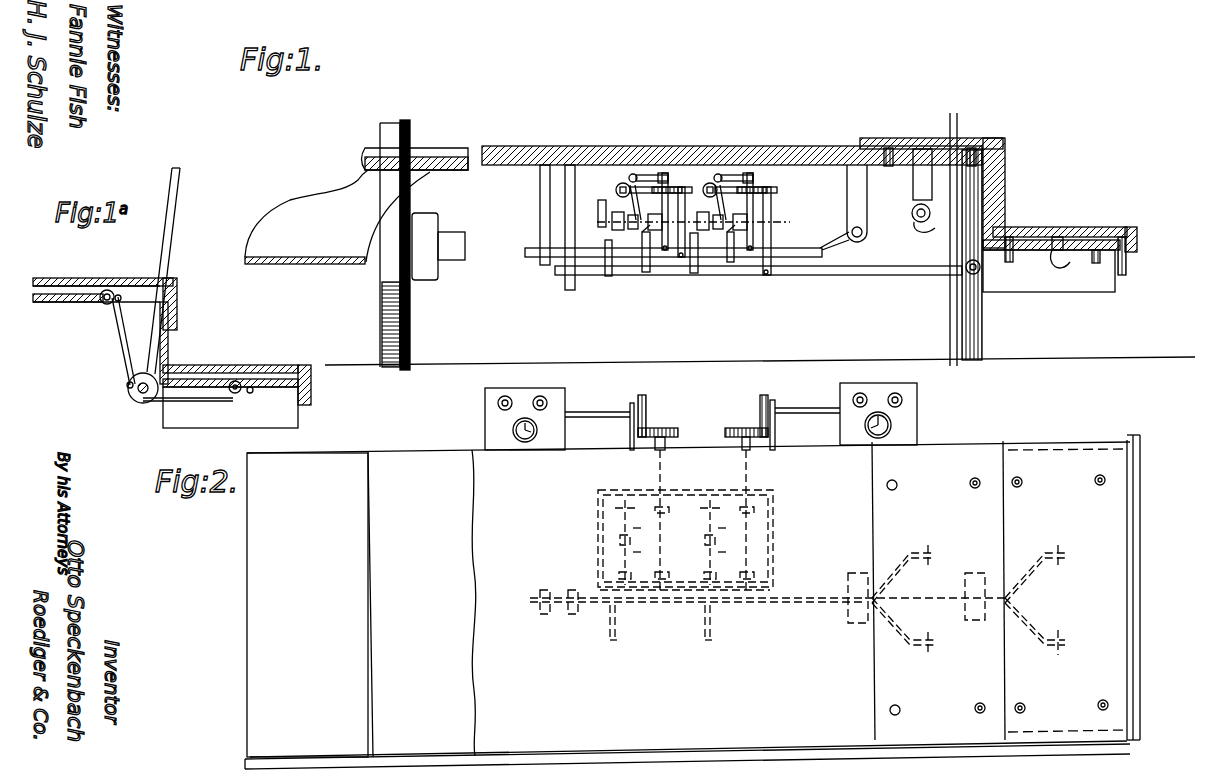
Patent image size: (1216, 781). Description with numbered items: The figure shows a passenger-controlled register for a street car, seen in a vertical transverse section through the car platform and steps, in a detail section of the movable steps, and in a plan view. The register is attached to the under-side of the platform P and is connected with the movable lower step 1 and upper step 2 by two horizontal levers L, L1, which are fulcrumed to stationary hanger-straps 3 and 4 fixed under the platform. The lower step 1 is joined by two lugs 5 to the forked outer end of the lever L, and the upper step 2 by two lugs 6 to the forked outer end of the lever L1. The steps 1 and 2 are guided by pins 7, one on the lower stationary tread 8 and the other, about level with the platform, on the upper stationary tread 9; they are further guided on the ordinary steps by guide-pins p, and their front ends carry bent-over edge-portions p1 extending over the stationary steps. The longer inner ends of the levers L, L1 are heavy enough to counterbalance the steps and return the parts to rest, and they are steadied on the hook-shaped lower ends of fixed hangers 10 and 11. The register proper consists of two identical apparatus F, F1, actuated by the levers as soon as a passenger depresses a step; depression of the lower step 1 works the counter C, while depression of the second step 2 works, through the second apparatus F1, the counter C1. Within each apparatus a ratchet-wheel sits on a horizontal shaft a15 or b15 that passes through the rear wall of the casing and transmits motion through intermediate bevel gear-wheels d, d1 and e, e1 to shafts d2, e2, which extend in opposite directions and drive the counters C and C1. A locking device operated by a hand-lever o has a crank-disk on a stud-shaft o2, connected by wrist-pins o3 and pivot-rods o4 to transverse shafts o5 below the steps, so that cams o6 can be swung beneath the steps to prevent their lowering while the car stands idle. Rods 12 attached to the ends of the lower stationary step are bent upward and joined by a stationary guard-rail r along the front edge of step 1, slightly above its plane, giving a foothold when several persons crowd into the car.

In FIG. 1, the lower step 1 is at (1040, 233).
In FIG. 1A, the lower step 1 is at (240, 365).
In FIG. 2, the lower step 1 is at (1093, 590).
In FIG. 1, the upper step 2 is at (935, 139).
In FIG. 1A, the upper step 2 is at (85, 278).
In FIG. 2, the upper step 2 is at (938, 590).
In FIG. 1, the hanger-strap 3 is at (962, 285).
In FIG. 2, the hanger-strap 3 is at (968, 605).
In FIG. 1, the hanger-strap 4 is at (860, 205).
In FIG. 2, the hanger-strap 4 is at (848, 620).
In FIG. 1, the lugs 5 is at (1060, 256).
In FIG. 1, the lugs 6 is at (918, 198).
In FIG. 1, the pins 7 is at (891, 147).
In FIG. 2, the pins 7 is at (968, 480).
In FIG. 1, the lower stationary tread 8 is at (313, 262).
In FIG. 2, the lower stationary tread 8 is at (307, 605).
In FIG. 1, the upper stationary tread 9 is at (430, 165).
In FIG. 2, the upper stationary tread 9 is at (393, 604).
In FIG. 1, the fixed hanger 10 is at (566, 280).
In FIG. 1, the fixed hanger 11 is at (544, 215).
In FIG. 1, the rods 12 is at (1088, 227).
In FIG. 2, the rods 12 is at (1090, 445).
In FIG. 1, the platform P is at (660, 146).
In FIG. 2, the platform P is at (687, 605).
In FIG. 1, the guide-pins p is at (1005, 180).
In FIG. 1, the bent-over edge-portions p1 is at (1090, 227).
In FIG. 1A, the bent-over edge-portions p1 is at (180, 318).
In FIG. 1, the guard-rail r is at (1138, 235).
In FIG. 1A, the guard-rail r is at (308, 388).
In FIG. 2, the guard-rail r is at (1142, 590).
In FIG. 1, the apparatus F is at (612, 199).
In FIG. 2, the apparatus F is at (770, 533).
In FIG. 2, the apparatus F1 is at (625, 536).
In FIG. 1, the lever L is at (558, 275).
In FIG. 2, the lever L is at (965, 600).
In FIG. 1, the lever L1 is at (530, 257).
In FIG. 2, the lever L1 is at (697, 609).
In FIG. 1A, the hand-lever o is at (165, 250).
In FIG. 1A, the stud-shaft o2 is at (140, 403).
In FIG. 1A, the wrist-pins o3 is at (128, 388).
In FIG. 1A, the pivot-rods o4 is at (120, 335).
In FIG. 1A, the transverse shafts o5 is at (103, 304).
In FIG. 1A, the cams o6 is at (98, 297).
In FIG. 2, the counter C is at (893, 415).
In FIG. 2, the counter C1 is at (500, 422).
In FIG. 2, the bevel gear-wheel e is at (676, 432).
In FIG. 2, the bevel gear-wheel e1 is at (658, 407).
In FIG. 2, the shaft e2 is at (599, 419).
In FIG. 2, the bevel gear-wheel d is at (744, 428).
In FIG. 2, the bevel gear-wheel d1 is at (773, 392).
In FIG. 2, the shaft d2 is at (805, 417).
In FIG. 2, the horizontal shaft a15 is at (760, 519).
In FIG. 2, the horizontal shaft b15 is at (645, 520).